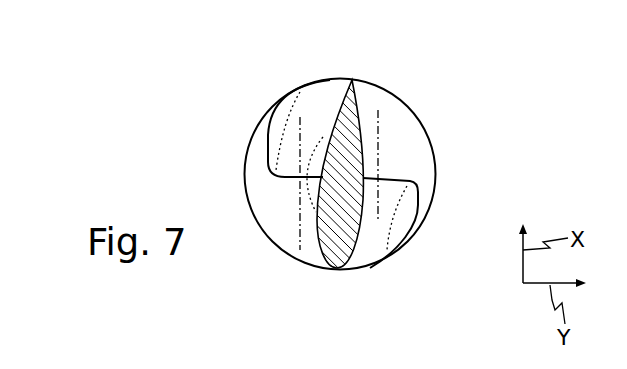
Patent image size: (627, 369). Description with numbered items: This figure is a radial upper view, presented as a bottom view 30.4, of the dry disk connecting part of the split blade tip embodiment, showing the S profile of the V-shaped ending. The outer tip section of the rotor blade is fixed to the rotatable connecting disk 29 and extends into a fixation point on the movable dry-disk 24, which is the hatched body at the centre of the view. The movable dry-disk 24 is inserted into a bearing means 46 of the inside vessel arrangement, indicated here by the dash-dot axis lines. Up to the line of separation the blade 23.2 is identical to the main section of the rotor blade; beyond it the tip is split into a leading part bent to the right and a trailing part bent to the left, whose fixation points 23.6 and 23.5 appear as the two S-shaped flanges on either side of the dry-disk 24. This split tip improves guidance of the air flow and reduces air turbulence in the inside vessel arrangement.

The bottom view 30.4 is at (308, 177).
The rotatable connecting disk 29 is at (196, 164).
The movable dry-disk 24 is at (368, 149).
The fixation point of trailing tip part 23.5 is at (285, 122).
The fixation point of leading tip part 23.6 is at (402, 217).
The blade 23.2 is at (348, 243).
The bearing means 46 is at (380, 119).